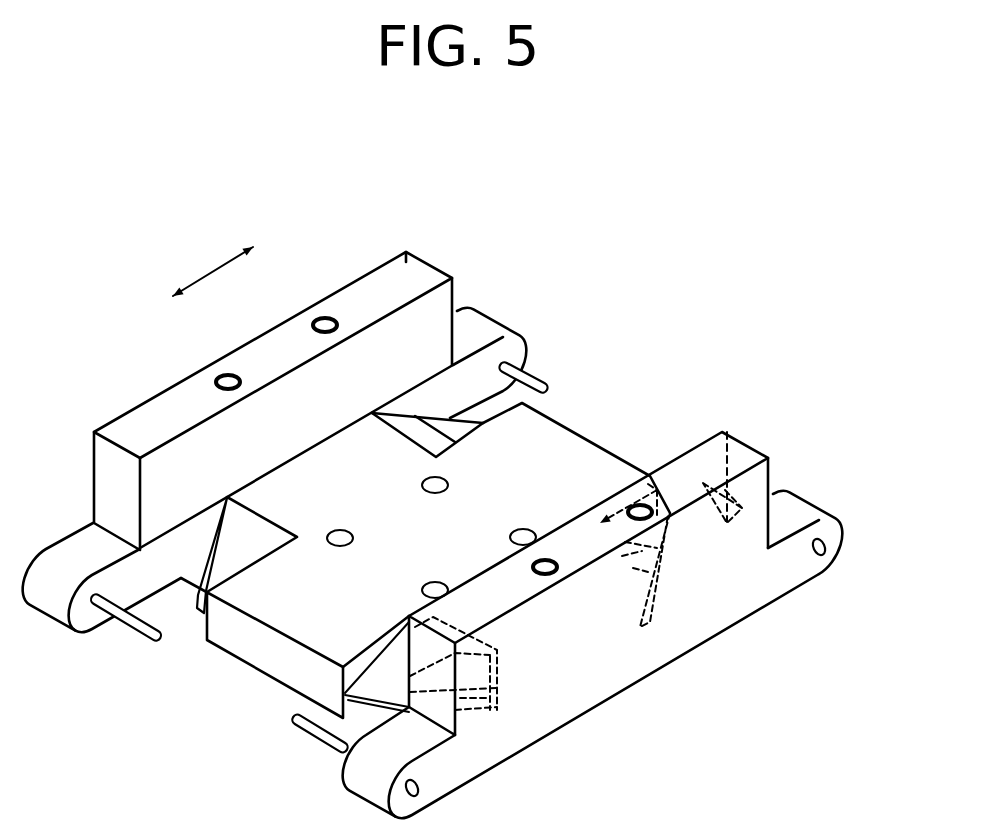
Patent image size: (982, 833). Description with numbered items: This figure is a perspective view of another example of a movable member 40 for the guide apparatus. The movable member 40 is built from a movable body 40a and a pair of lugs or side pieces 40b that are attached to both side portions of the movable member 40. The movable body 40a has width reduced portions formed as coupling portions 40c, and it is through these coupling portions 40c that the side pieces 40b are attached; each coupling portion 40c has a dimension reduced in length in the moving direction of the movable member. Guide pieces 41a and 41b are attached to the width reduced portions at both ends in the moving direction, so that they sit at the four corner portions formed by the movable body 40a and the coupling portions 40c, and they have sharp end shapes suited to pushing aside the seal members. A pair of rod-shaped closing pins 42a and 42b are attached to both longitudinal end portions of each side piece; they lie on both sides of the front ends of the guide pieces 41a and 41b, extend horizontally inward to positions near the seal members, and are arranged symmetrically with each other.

The movable member 40 is at (580, 382).
The movable body 40a is at (562, 443).
The side piece 40b is at (417, 282).
The coupling portion 40c is at (383, 457).
The guide piece 41a is at (237, 543).
The guide piece 41b is at (388, 412).
The closing pin 42a is at (146, 637).
The closing pin 42b is at (527, 375).